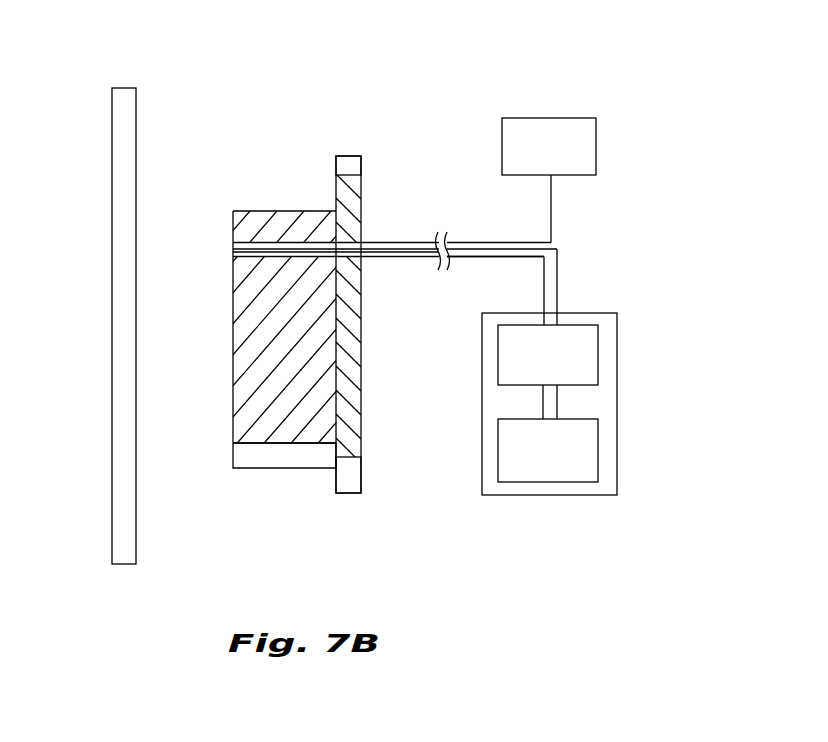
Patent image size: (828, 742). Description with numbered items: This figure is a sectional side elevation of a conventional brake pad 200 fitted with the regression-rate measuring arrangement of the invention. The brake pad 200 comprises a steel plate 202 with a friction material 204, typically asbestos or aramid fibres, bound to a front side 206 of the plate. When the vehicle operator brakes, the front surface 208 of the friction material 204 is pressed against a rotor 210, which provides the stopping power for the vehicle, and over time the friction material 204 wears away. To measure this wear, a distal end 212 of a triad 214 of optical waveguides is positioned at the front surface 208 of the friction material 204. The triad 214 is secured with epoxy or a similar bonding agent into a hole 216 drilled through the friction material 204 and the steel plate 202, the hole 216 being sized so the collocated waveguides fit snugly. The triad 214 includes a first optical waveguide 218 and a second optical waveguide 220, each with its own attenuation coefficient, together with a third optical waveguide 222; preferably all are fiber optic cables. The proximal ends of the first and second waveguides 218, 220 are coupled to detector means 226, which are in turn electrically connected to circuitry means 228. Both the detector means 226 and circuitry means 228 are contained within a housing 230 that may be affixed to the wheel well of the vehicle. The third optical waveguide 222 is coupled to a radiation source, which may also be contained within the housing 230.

The brake pad 200 is at (393, 126).
The steel plate 202 is at (362, 243).
The friction material 204 is at (305, 354).
The front side 206 is at (336, 168).
The front surface 208 is at (233, 380).
The rotor 210 is at (136, 143).
The distal end 212 is at (232, 250).
The triad 214 is at (392, 257).
The hole 216 is at (363, 242).
The first optical waveguide 218 is at (469, 257).
The second optical waveguide 220 is at (559, 293).
The third optical waveguide 222 is at (553, 197).
The detector means 226 is at (566, 369).
The circuitry means 228 is at (566, 464).
The housing 230 is at (567, 161).